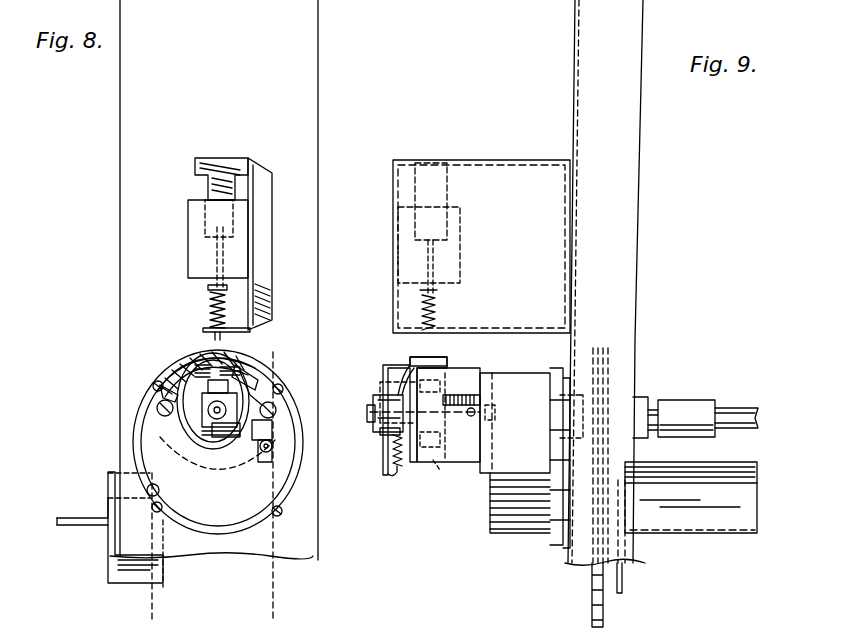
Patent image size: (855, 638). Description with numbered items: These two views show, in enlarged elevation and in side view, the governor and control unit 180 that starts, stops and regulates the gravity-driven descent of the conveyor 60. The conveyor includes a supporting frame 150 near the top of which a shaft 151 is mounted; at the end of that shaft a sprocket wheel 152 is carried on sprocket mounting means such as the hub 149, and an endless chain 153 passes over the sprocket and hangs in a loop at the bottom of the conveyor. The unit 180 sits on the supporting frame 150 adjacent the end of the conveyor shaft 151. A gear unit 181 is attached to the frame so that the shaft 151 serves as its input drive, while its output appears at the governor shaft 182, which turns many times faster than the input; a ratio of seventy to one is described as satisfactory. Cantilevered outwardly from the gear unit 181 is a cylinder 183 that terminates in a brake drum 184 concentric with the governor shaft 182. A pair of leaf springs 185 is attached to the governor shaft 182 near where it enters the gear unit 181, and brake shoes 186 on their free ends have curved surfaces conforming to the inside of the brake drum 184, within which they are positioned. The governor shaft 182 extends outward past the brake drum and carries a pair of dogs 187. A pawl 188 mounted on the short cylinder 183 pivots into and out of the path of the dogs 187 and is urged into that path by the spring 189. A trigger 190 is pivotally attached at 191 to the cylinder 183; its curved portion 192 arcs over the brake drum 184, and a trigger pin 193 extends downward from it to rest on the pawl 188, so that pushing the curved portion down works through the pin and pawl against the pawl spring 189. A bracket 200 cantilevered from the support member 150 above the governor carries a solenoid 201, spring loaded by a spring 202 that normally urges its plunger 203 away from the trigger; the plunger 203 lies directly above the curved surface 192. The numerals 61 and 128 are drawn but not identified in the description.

In FIG. 8, the conveyor 60 is at (97, 489).
In FIG. 9, the conveyor 60 is at (684, 546).
In FIG. 8, the arm 61 is at (80, 536).
In FIG. 9, the arm 61 is at (730, 455).
In FIG. 8, the base 128 is at (288, 637).
In FIG. 9, the base 128 is at (522, 633).
In FIG. 9, the hub 149 is at (640, 397).
In FIG. 8, the supporting frame 150 is at (321, 45).
In FIG. 9, the supporting frame 150 is at (575, 50).
In FIG. 9, the shaft 151 is at (733, 410).
In FIG. 8, the sprocket wheel 152 is at (253, 367).
In FIG. 9, the sprocket wheel 152 is at (610, 357).
In FIG. 8, the endless chain 153 is at (275, 594).
In FIG. 9, the endless chain 153 is at (605, 617).
In FIG. 8, the governor and control unit 180 is at (124, 417).
In FIG. 8, the gear unit 181 is at (135, 443).
In FIG. 9, the gear unit 181 is at (512, 533).
In FIG. 8, the governor shaft 182 is at (205, 414).
In FIG. 9, the governor shaft 182 is at (487, 410).
In FIG. 9, the cylinder 183 is at (470, 448).
In FIG. 8, the brake drum 184 is at (170, 372).
In FIG. 9, the brake drum 184 is at (445, 373).
In FIG. 8, the leaf spring 185 is at (212, 418).
In FIG. 9, the leaf spring 185 is at (445, 397).
In FIG. 8, the brake shoe 186 is at (205, 365).
In FIG. 9, the brake shoe 186 is at (415, 382).
In FIG. 8, the dog 187 is at (156, 388).
In FIG. 9, the dog 187 is at (388, 400).
In FIG. 8, the pawl 188 is at (250, 423).
In FIG. 9, the pawl 188 is at (388, 425).
In FIG. 8, the spring 189 is at (268, 465).
In FIG. 9, the spring 189 is at (388, 467).
In FIG. 8, the trigger 190 is at (213, 378).
In FIG. 9, the trigger 190 is at (418, 360).
In FIG. 8, the pivot 191 is at (150, 405).
In FIG. 8, the curved portion 192 is at (253, 360).
In FIG. 9, the curved portion 192 is at (437, 363).
In FIG. 8, the trigger pin 193 is at (258, 368).
In FIG. 9, the trigger pin 193 is at (395, 393).
In FIG. 8, the bracket 200 is at (262, 167).
In FIG. 9, the bracket 200 is at (518, 160).
In FIG. 8, the solenoid 201 is at (188, 214).
In FIG. 9, the solenoid 201 is at (450, 208).
In FIG. 8, the spring 202 is at (212, 297).
In FIG. 9, the spring 202 is at (438, 308).
In FIG. 8, the plunger 203 is at (217, 251).
In FIG. 9, the plunger 203 is at (428, 262).